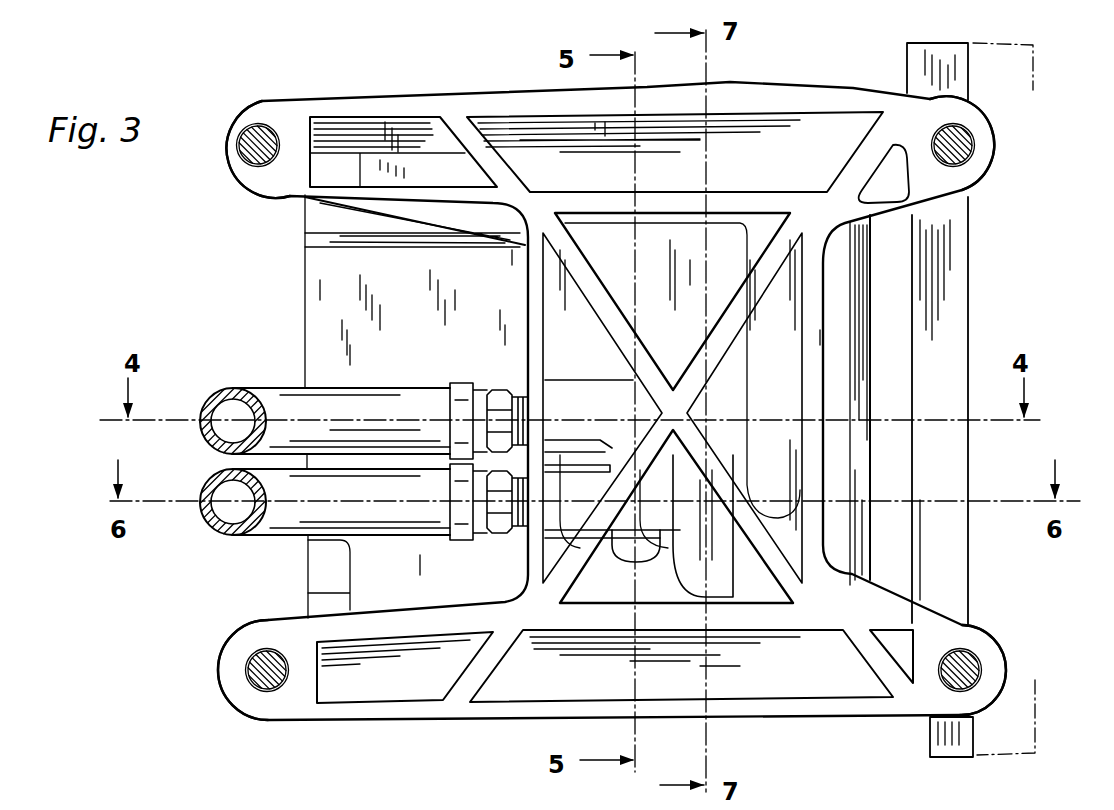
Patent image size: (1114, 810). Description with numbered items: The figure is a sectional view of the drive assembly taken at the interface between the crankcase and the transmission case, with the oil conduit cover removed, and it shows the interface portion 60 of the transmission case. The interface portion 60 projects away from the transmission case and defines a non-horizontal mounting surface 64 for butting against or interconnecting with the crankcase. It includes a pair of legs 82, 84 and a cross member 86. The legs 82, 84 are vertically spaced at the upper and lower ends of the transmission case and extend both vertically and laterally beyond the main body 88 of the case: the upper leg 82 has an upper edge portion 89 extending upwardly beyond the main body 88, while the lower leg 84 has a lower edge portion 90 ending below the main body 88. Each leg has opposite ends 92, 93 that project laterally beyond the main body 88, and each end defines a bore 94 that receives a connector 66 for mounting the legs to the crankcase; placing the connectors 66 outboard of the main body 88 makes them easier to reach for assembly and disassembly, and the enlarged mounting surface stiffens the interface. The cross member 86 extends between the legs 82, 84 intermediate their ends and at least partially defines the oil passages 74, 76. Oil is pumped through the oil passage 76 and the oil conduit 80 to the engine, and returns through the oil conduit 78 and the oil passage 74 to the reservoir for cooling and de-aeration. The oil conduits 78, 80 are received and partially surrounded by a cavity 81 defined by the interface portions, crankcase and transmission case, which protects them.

The interface portion 60 is at (203, 682).
The non-horizontal mounting surface 64 is at (593, 116).
The connectors 66 is at (258, 126).
The oil passage 74 is at (590, 379).
The oil passage 76 is at (577, 566).
The oil conduit 78 is at (283, 387).
The oil conduit 80 is at (290, 530).
The cavity 81 is at (327, 264).
The leg 82 is at (433, 98).
The leg 84 is at (416, 719).
The cross member 86 is at (826, 334).
The main body 88 is at (305, 299).
The upper edge portion 89 is at (508, 94).
The lower edge portion 90 is at (830, 714).
The end 92 is at (218, 143).
The end 93 is at (983, 108).
The bore 94 is at (233, 176).